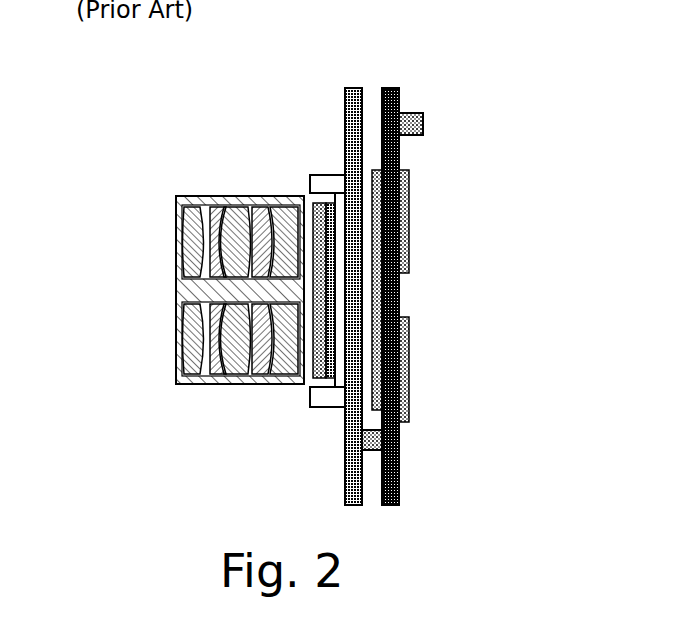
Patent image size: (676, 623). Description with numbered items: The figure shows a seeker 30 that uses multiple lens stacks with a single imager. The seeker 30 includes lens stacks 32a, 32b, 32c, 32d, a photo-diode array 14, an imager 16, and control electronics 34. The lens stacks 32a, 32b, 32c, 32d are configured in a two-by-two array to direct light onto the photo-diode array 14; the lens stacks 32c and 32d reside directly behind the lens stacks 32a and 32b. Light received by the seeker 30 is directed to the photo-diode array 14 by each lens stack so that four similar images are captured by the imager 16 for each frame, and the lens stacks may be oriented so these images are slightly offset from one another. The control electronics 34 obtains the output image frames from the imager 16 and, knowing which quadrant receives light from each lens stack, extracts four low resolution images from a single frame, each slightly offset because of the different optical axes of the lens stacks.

The seeker 30 is at (452, 100).
The lens stack 32a is at (199, 223).
The lens stack 32b is at (207, 357).
The lens stack 32c is at (148, 254).
The lens stack 32d is at (148, 345).
The photo-diode array 14 is at (327, 354).
The imager 16 is at (350, 88).
The control electronics 34 is at (388, 88).